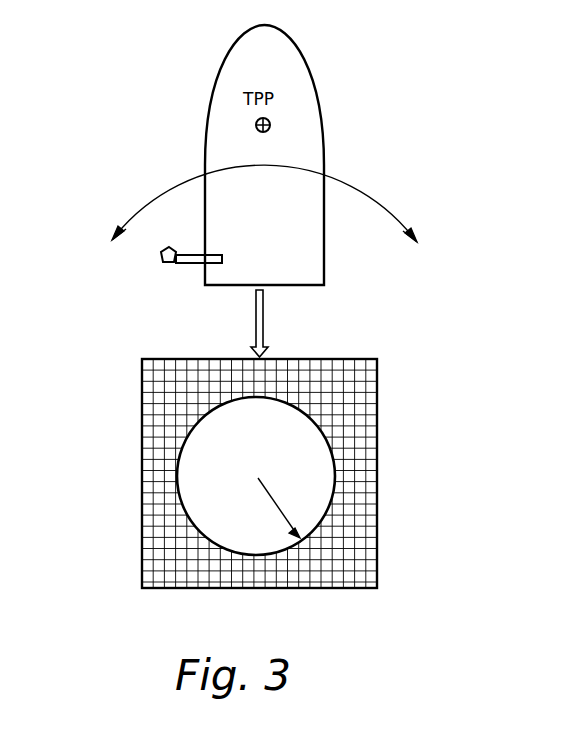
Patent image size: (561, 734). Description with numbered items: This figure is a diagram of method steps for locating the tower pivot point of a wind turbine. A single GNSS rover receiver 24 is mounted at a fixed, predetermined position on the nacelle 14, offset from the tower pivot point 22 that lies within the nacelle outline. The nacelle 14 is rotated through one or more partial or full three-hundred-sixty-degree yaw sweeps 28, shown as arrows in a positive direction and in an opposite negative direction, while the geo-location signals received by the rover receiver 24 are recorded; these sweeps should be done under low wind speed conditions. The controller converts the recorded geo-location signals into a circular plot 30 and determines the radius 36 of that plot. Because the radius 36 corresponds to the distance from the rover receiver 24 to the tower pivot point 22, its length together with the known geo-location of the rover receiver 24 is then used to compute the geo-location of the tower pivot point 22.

The nacelle 14 is at (324, 108).
The TPP 22 is at (256, 125).
The rover receiver 24 is at (162, 254).
The yaw sweeps 28 is at (122, 228).
The circular plot 30 is at (142, 452).
The radius 36 is at (268, 502).